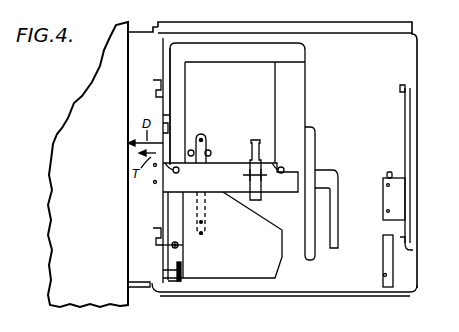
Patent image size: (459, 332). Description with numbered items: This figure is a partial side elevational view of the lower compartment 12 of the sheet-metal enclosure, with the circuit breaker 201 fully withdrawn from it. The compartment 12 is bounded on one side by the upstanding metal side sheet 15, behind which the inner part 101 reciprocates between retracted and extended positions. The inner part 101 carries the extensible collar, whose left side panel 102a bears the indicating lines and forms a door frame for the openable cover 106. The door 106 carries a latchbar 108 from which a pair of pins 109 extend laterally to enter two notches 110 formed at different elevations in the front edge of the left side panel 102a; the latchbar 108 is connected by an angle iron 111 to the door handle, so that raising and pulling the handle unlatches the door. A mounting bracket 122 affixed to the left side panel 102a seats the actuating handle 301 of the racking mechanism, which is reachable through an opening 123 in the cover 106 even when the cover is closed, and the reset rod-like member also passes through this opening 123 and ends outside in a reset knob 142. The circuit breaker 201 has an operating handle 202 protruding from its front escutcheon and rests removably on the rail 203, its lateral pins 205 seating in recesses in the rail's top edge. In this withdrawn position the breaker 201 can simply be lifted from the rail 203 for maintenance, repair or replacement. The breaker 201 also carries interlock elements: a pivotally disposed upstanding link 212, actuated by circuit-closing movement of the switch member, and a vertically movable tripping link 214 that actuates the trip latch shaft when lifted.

The compartment 12 is at (98, 224).
The side sheet 15 is at (62, 138).
The inner part 101 is at (164, 310).
The left side panel 102a is at (133, 280).
The cover 106 is at (373, 43).
The latchbar 108 is at (404, 137).
The pins 109 is at (403, 88).
The notches 110 is at (153, 86).
The angle iron 111 is at (398, 197).
The mounting bracket 122 is at (450, 13).
The opening 123 is at (384, 275).
The reset knob 142 is at (184, 246).
The circuit breaker 201 is at (300, 75).
The operating handle 202 is at (336, 195).
The rail 203 is at (215, 192).
The pins 205 is at (174, 173).
The upstanding link 212 is at (256, 140).
The tripping link 214 is at (204, 143).
The actuating handle 301 is at (182, 268).